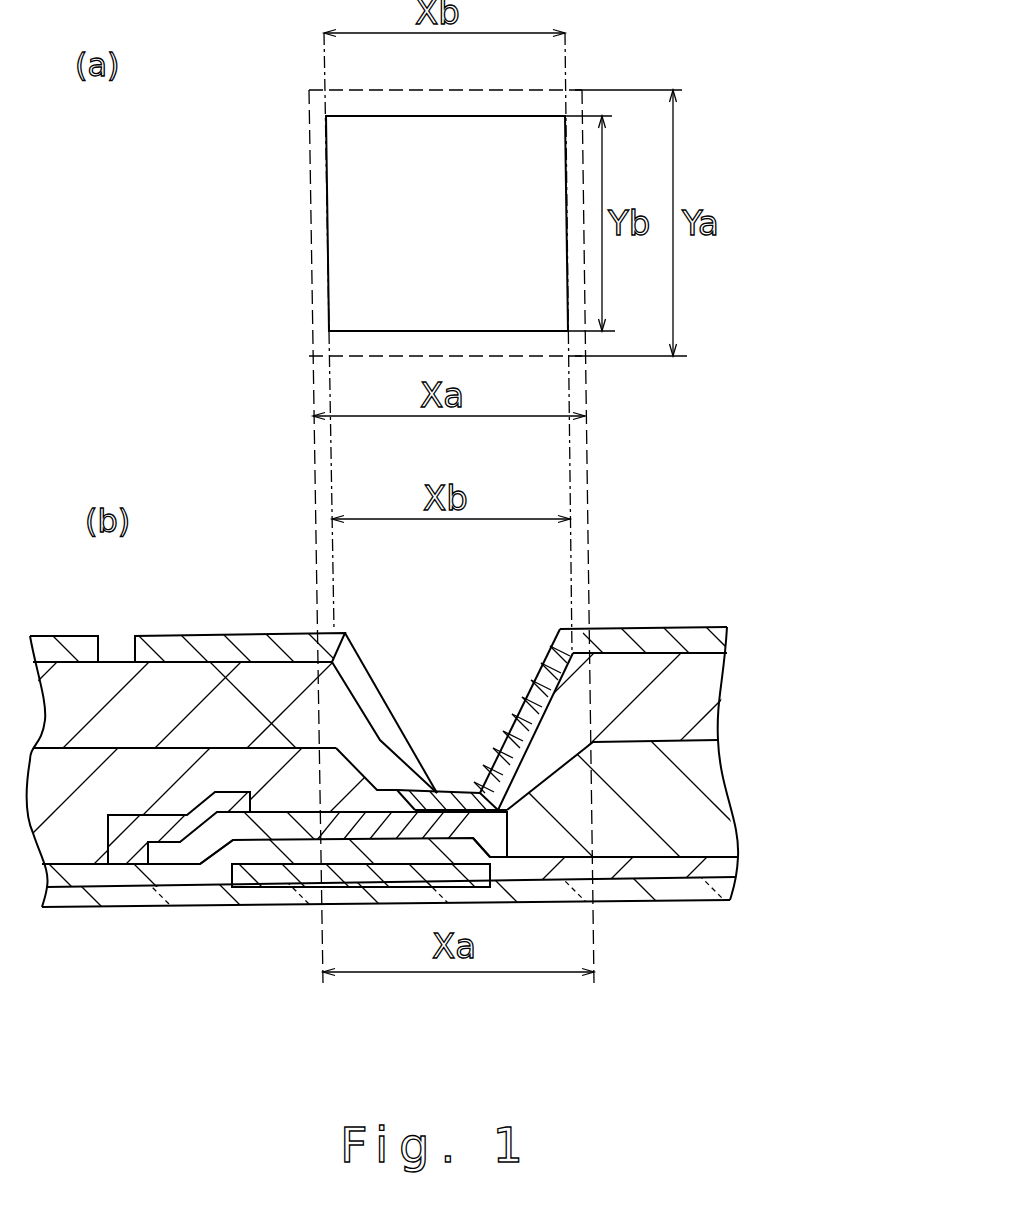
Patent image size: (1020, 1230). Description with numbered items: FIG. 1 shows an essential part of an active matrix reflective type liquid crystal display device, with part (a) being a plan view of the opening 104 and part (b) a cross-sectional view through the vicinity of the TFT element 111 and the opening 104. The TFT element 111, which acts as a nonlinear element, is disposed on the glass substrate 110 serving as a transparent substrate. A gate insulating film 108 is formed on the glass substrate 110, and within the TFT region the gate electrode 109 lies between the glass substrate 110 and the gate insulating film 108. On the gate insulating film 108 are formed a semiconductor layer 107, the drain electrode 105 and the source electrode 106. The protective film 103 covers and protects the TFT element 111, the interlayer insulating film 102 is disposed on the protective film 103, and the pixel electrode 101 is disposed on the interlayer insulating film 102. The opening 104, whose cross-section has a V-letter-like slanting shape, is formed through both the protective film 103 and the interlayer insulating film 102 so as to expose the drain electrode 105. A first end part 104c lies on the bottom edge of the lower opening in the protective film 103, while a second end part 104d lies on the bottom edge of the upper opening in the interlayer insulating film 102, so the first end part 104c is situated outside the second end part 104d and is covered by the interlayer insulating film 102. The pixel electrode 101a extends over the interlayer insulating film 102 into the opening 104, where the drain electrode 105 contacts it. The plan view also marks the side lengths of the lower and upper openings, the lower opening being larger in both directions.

The pixel electrode 101 is at (703, 643).
The pixel electrode 101a is at (405, 618).
The interlayer insulating film 102 is at (703, 700).
The protective film 103 is at (703, 802).
The opening 104 is at (523, 672).
The first end part 104c is at (507, 810).
The second end part 104d is at (477, 793).
The drain electrode 105 is at (490, 832).
The source electrode 106 is at (130, 850).
The semiconductor layer 107 is at (462, 850).
The gate insulating film 108 is at (703, 864).
The gate electrode 109 is at (272, 872).
The glass substrate 110 is at (707, 887).
The TFT element 111 is at (405, 781).